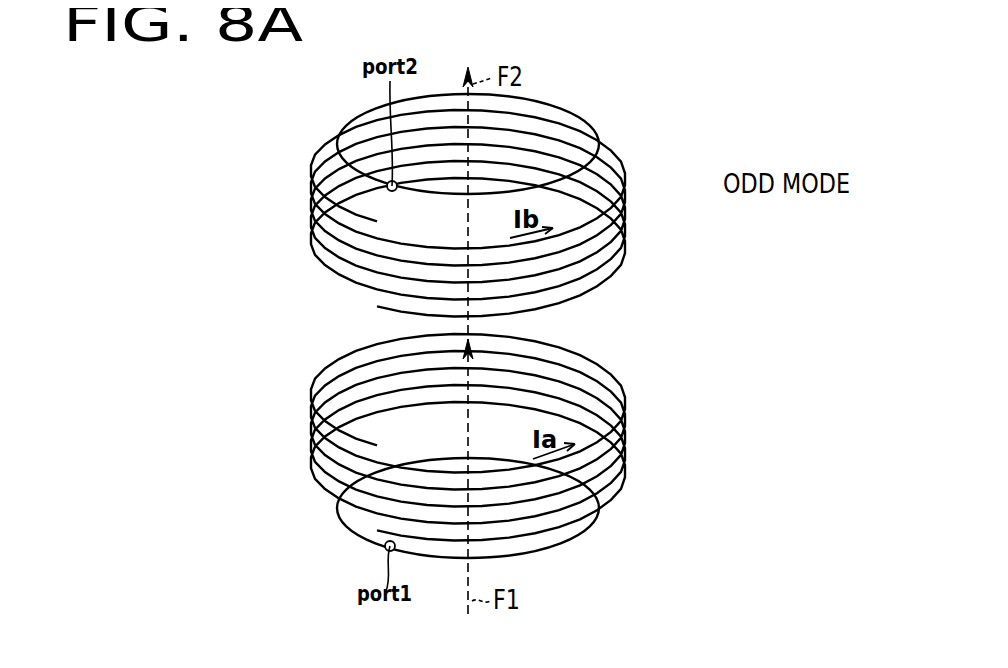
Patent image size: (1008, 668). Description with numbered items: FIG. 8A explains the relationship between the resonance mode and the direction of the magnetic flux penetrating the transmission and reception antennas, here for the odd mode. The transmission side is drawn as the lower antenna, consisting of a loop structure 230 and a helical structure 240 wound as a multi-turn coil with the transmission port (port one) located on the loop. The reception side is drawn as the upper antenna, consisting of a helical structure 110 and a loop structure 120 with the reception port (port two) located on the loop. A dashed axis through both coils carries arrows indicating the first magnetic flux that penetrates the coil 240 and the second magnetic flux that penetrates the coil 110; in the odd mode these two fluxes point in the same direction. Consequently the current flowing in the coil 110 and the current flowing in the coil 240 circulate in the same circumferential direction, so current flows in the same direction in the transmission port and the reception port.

The helical structure 110 is at (628, 213).
The loop structure 120 is at (545, 101).
The loop structure 230 is at (563, 541).
The helical structure 240 is at (626, 418).